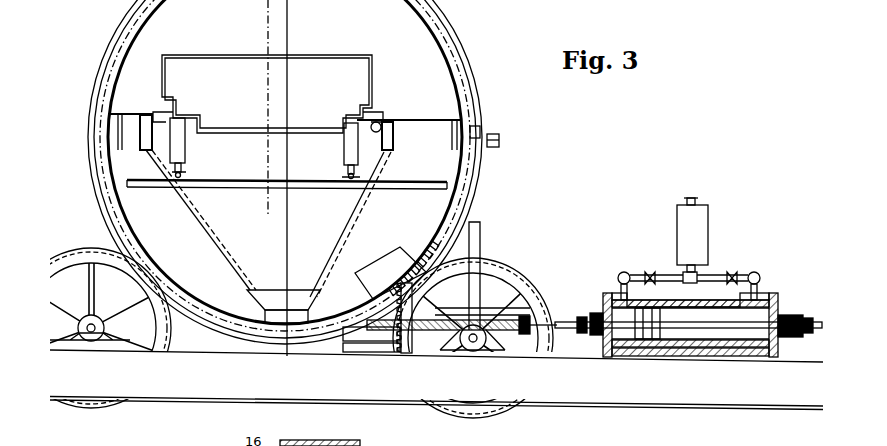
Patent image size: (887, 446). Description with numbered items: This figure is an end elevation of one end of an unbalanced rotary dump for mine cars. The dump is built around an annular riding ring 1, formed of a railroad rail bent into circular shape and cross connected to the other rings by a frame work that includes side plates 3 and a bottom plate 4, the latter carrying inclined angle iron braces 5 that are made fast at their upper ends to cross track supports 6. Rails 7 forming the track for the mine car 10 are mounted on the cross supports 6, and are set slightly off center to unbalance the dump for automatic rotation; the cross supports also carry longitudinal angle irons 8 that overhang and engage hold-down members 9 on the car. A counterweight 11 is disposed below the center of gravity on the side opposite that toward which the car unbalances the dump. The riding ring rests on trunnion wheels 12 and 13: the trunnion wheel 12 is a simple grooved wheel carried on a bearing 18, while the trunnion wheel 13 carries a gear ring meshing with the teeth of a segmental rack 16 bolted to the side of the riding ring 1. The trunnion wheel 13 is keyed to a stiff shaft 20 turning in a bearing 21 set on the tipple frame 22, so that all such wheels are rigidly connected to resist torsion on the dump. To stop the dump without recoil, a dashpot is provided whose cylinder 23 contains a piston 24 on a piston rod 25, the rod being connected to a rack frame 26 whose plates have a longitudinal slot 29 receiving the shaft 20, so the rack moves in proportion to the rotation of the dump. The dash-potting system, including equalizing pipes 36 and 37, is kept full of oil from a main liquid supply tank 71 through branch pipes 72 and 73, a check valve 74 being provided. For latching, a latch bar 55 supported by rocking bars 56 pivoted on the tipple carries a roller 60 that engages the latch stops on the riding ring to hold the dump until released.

The annular riding ring 1 is at (452, 34).
The side plate 3 is at (457, 121).
The bottom plate 4 is at (244, 336).
The inclined angle iron brace 5 is at (330, 255).
The cross track support 6 is at (291, 187).
The rail 7 is at (186, 172).
The longitudinal angle iron 8 is at (380, 120).
The hold-down member 9 is at (389, 122).
The mine car 10 is at (341, 66).
The counterweight 11 is at (400, 247).
The trunnion wheel 12 is at (106, 411).
The trunnion wheel 13 is at (518, 268).
The segmental rack 16 is at (440, 249).
The bearing 18 is at (92, 346).
The shaft 20 is at (490, 350).
The bearing 21 is at (473, 352).
The tipple frame 22 is at (642, 406).
The cylinder 23 is at (713, 302).
The piston 24 is at (646, 307).
The piston rod 25 is at (763, 320).
The rack frame 26 is at (537, 286).
The longitudinal slot 29 is at (392, 355).
The pressure equalizing pipe 36 is at (626, 271).
The pressure equalizing pipe 37 is at (762, 281).
The latch bar 55 is at (500, 141).
The rocking bar 56 is at (480, 233).
The roller 60 is at (486, 131).
The main liquid supply tank 71 is at (705, 230).
The branch pipe 72 is at (640, 272).
The branch pipe 73 is at (713, 275).
The check valve 74 is at (650, 273).